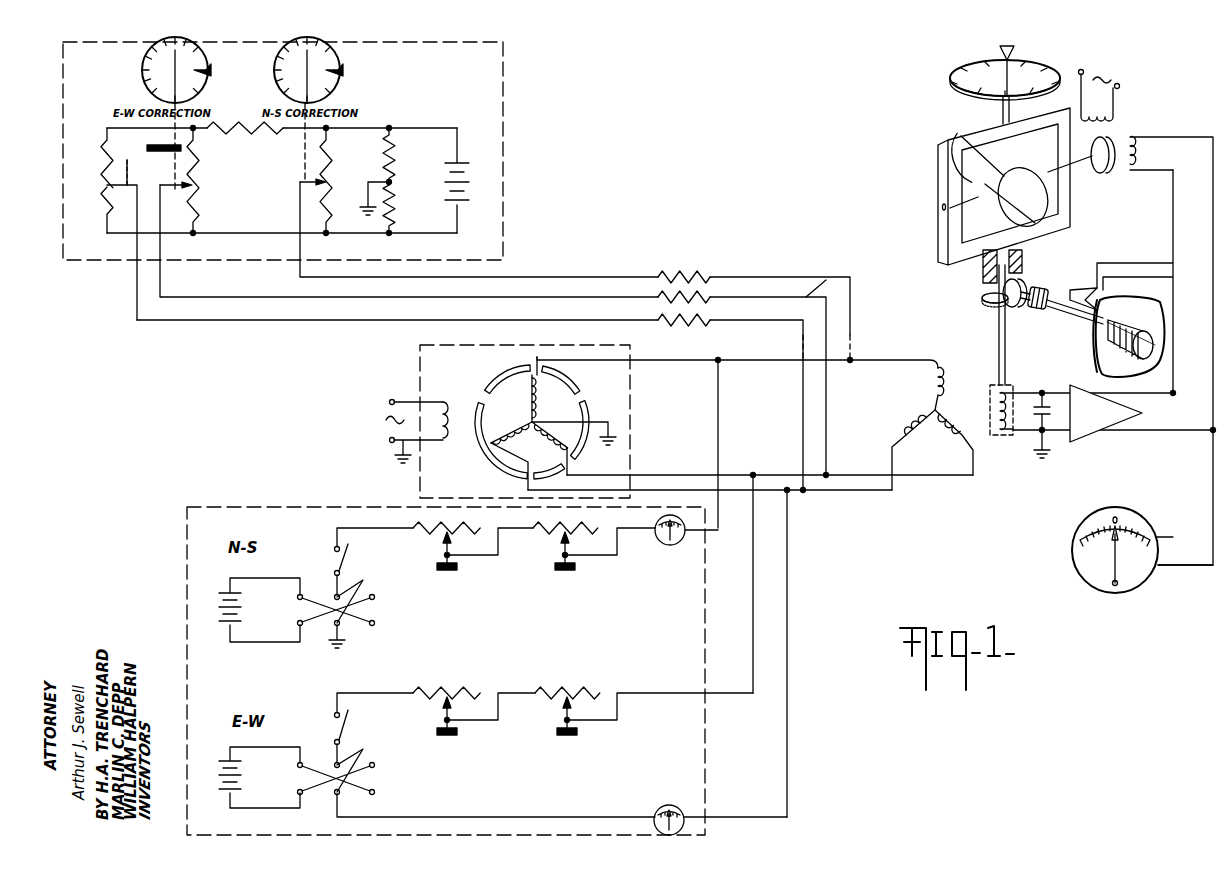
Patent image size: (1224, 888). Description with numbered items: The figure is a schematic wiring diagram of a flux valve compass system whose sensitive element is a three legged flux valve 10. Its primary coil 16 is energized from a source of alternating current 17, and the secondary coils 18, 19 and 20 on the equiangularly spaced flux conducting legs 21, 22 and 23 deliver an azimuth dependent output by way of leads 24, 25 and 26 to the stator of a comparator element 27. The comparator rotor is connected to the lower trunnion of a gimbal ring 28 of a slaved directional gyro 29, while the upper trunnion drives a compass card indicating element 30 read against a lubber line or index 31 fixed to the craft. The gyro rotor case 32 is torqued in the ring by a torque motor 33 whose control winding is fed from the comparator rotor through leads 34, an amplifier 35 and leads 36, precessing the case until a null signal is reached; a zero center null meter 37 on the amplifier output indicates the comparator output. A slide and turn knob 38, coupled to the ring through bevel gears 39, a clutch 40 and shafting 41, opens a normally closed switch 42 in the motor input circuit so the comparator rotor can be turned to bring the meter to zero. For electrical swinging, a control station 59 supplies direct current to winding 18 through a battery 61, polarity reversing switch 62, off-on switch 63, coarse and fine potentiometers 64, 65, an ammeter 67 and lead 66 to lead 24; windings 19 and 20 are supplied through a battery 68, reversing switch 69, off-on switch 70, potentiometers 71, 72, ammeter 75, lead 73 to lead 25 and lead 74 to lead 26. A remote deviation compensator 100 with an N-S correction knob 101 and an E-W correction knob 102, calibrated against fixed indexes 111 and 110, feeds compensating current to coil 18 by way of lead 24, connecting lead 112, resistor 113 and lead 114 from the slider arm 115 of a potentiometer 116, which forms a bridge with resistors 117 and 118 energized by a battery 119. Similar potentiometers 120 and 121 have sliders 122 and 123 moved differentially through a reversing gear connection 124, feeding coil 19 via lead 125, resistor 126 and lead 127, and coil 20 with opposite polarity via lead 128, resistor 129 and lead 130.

The flux valve 10 is at (631, 395).
The primary coil 16 is at (444, 404).
The source of alternating current electrical energy 17 is at (390, 402).
The secondary coil 18 is at (528, 392).
The secondary coil 19 is at (552, 440).
The secondary coil 20 is at (512, 438).
The flux conducting leg 21 is at (534, 372).
The flux conducting leg 22 is at (568, 450).
The flux conducting leg 23 is at (486, 452).
The lead 24 is at (708, 358).
The lead 25 is at (698, 474).
The lead 26 is at (852, 490).
The comparator element 27 is at (958, 392).
The gimbal ring 28 is at (940, 232).
The slaved directional gyro 29 is at (926, 154).
The compass card indicating element 30 is at (948, 76).
The lubber line or index 31 is at (998, 56).
The rotor case 32 is at (988, 212).
The torque motor 33 is at (1134, 128).
The leads 34 is at (1034, 418).
The amplifier 35 is at (1100, 436).
The leads 36 is at (1158, 372).
The zero center null meter 37 is at (1072, 536).
The slide and turn knob 38 is at (1102, 360).
The bevel gears 39 is at (988, 306).
The clutch 40 is at (1048, 288).
The shafting 41 is at (1076, 322).
The normally closed switch 42 is at (1088, 280).
The control station 59 is at (706, 742).
The battery 61 is at (214, 596).
The polarity reversing switch 62 is at (386, 598).
The off-on switch 63 is at (332, 554).
The coarse potentiometer 64 is at (438, 540).
The fine potentiometer 65 is at (556, 546).
The lead 66 is at (720, 420).
The ammeter 67 is at (668, 544).
The battery 68 is at (212, 764).
The polarity reversing switch 69 is at (380, 770).
The off-on switch 70 is at (334, 718).
The coarse potentiometer 71 is at (462, 680).
The fine potentiometer 72 is at (574, 680).
The lead 73 is at (756, 610).
The lead 74 is at (790, 665).
The ammeter 75 is at (658, 806).
The deviation compensator 100 is at (318, 151).
The N-S correction knob 101 is at (335, 78).
The E-W correction knob 102 is at (203, 78).
The fixed index 110 is at (214, 68).
The fixed index 111 is at (346, 68).
The connecting lead 112 is at (790, 276).
The resistor 113 is at (692, 272).
The lead 114 is at (584, 272).
The slider arm 115 is at (298, 182).
The potentiometer 116 is at (330, 180).
The resistor 117 is at (394, 164).
The resistor 118 is at (394, 208).
The battery 119 is at (466, 160).
The potentiometer 120 is at (196, 182).
The potentiometer 121 is at (104, 184).
The slider 122 is at (164, 184).
The slider 123 is at (108, 192).
The reversing gear connection 124 is at (152, 146).
The lead 125 is at (276, 294).
The resistor 126 is at (714, 292).
The lead 127 is at (828, 280).
The lead 128 is at (250, 321).
The resistor 129 is at (714, 315).
The lead 130 is at (802, 332).